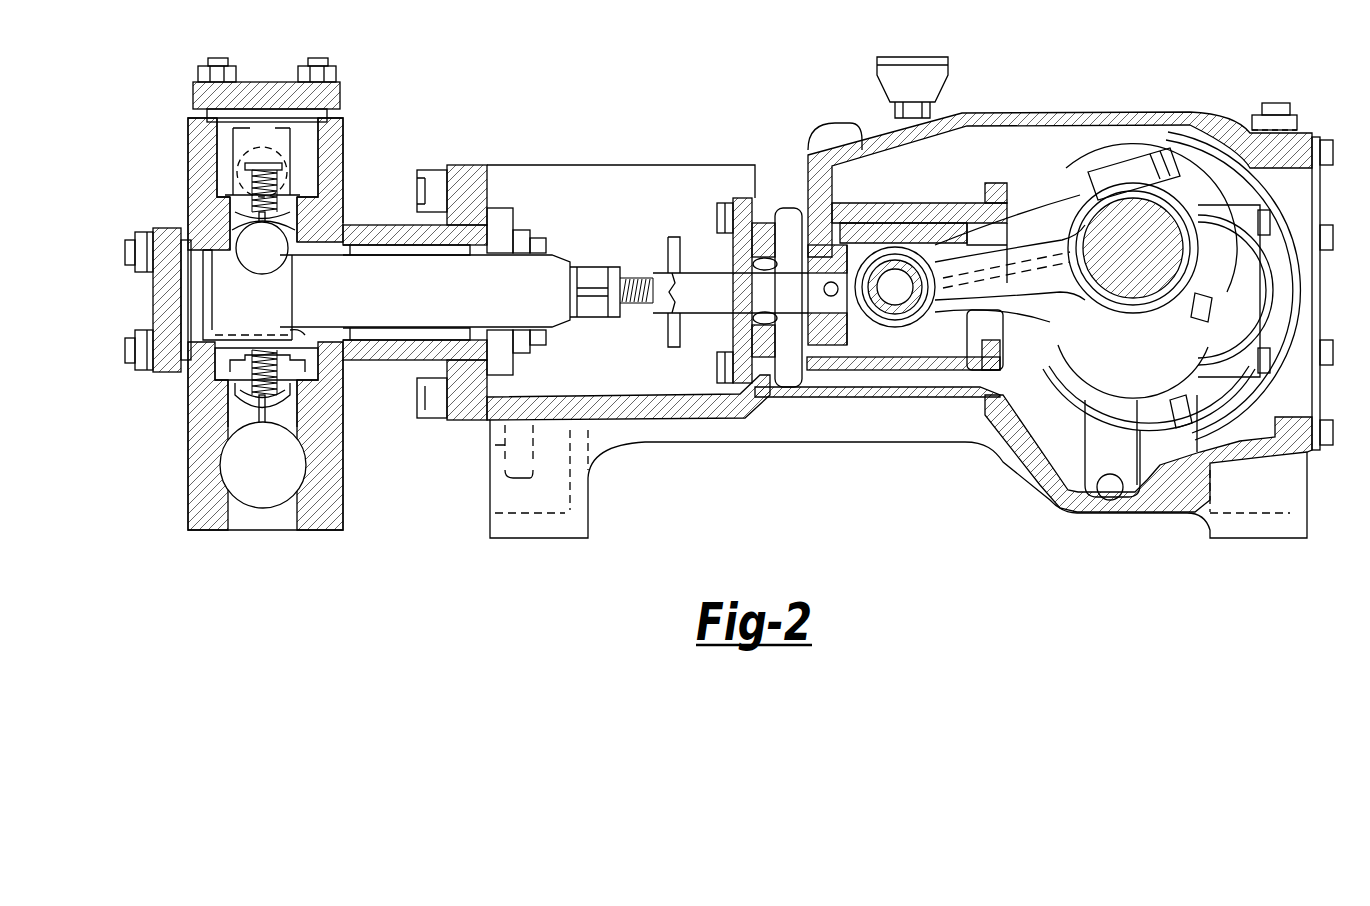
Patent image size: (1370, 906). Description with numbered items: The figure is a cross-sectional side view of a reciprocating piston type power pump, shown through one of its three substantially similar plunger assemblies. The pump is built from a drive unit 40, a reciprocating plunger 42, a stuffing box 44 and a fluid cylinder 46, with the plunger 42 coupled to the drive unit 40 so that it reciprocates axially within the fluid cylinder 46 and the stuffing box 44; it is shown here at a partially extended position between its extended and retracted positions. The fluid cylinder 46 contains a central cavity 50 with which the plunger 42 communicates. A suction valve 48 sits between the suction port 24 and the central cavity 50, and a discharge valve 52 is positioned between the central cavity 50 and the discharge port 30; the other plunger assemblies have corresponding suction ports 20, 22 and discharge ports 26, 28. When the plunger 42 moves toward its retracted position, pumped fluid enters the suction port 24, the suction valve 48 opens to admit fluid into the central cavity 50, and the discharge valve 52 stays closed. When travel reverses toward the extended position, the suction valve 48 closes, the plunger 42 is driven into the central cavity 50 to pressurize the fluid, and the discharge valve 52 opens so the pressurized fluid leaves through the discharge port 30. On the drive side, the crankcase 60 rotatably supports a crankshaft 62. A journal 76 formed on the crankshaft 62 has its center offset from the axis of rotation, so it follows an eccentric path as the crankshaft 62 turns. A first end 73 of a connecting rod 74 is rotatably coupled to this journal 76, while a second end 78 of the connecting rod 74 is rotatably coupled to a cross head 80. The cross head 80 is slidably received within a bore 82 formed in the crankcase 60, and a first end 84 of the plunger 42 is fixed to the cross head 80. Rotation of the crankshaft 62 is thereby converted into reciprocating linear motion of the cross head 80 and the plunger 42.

The suction port 20 is at (294, 498).
The suction port 22 is at (294, 498).
The suction port 24 is at (252, 493).
The discharge port 26 is at (351, 181).
The discharge port 28 is at (351, 181).
The discharge port 30 is at (288, 166).
The drive unit 40 is at (875, 319).
The reciprocating plunger 42 is at (527, 268).
The stuffing box 44 is at (387, 233).
The fluid cylinder 46 is at (295, 316).
The suction valve 48 is at (235, 415).
The central cavity 50 is at (272, 255).
The discharge valve 52 is at (228, 228).
The crankcase 60 is at (1022, 113).
The crankshaft 62 is at (1155, 250).
The first end 73 is at (1095, 168).
The connecting rod 74 is at (1086, 247).
The journal 76 is at (1190, 225).
The second end 78 is at (900, 250).
The cross head 80 is at (900, 352).
The bore 82 is at (985, 352).
The first end 84 is at (790, 322).